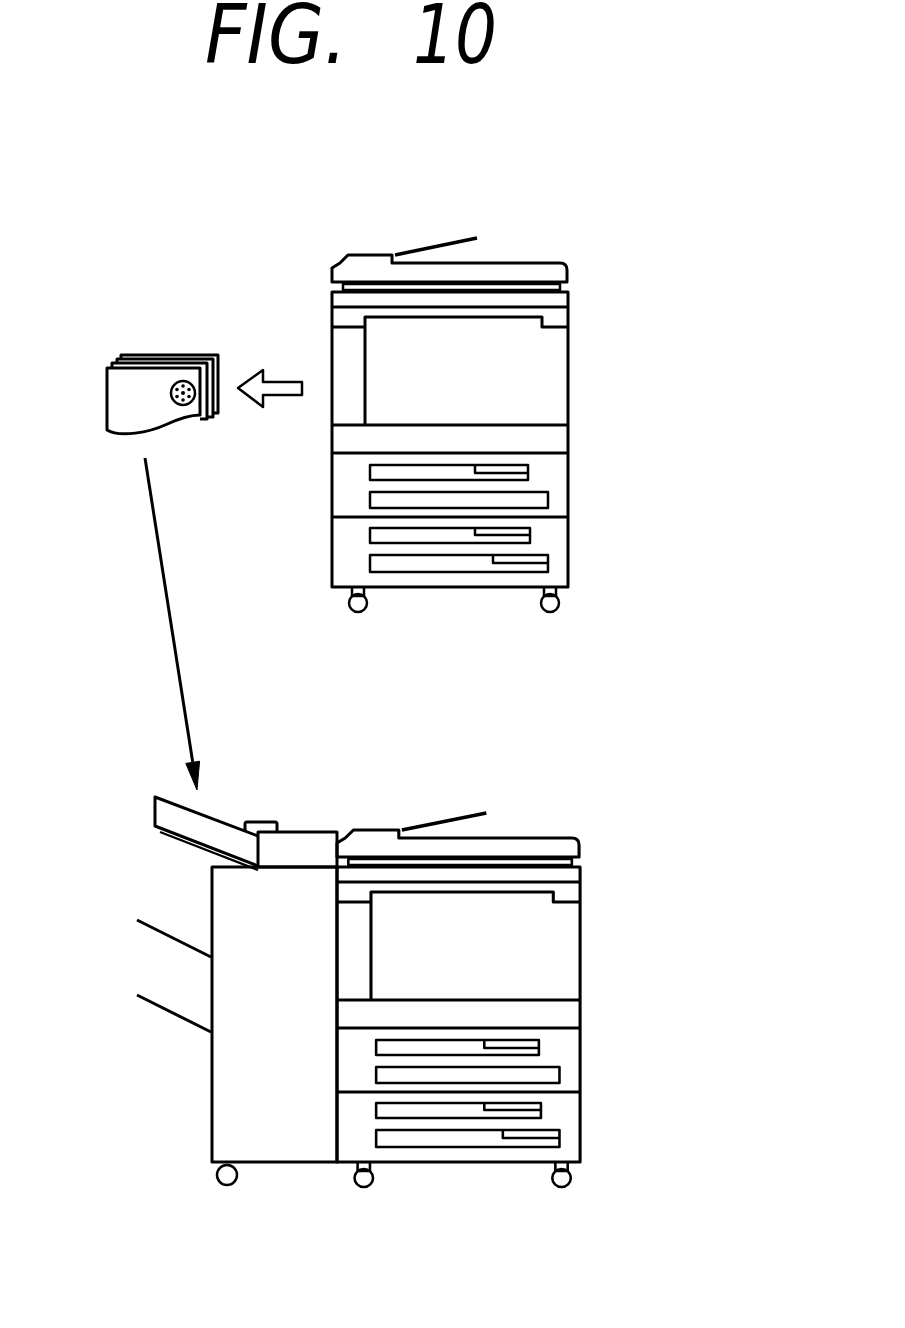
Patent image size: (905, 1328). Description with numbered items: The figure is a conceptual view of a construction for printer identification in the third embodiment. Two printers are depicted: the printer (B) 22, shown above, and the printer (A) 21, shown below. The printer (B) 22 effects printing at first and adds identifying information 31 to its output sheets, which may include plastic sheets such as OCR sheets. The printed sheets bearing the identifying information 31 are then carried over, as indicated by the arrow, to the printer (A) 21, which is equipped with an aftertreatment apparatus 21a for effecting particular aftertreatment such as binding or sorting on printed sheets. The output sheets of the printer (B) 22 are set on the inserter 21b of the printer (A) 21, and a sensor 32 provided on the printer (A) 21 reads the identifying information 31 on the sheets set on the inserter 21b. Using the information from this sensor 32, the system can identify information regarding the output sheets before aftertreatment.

The printer (A) 21 is at (315, 1007).
The aftertreatment apparatus 21a is at (260, 1145).
The inserter 21b is at (153, 810).
The printer (B) 22 is at (334, 578).
The identifying information 31 is at (182, 381).
The sensor 32 is at (253, 822).